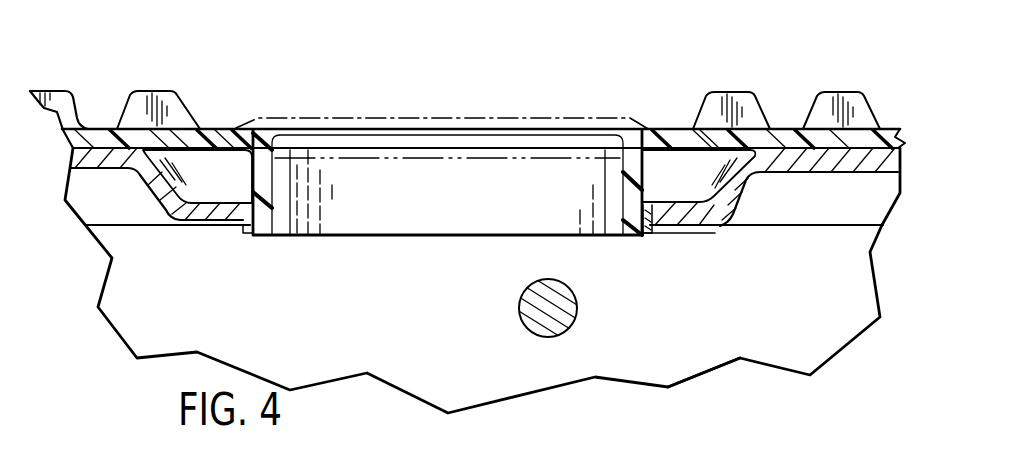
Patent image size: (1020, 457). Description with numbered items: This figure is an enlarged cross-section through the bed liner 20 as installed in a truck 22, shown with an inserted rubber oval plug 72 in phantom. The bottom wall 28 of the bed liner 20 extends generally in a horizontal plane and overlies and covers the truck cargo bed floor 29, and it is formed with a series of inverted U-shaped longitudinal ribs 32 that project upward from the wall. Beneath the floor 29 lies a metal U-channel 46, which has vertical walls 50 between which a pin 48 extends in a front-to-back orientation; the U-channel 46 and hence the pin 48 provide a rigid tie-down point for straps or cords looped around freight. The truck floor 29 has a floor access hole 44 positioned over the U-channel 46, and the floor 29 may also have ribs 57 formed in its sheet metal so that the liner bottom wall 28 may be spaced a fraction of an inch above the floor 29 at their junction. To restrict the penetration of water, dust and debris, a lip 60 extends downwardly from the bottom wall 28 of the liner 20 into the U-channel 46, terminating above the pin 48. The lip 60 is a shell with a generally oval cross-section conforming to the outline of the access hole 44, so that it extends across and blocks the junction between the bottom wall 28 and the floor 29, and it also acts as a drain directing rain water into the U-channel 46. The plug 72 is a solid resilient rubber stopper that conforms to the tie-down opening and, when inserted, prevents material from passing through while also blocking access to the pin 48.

The bed liner 20 is at (785, 120).
The truck 22 is at (842, 275).
The bottom wall 28 is at (95, 127).
The truck cargo bed floor 29 is at (148, 226).
The inverted U-shaped longitudinal ribs 32 is at (183, 98).
The floor access holes 44 is at (643, 195).
The U-channel 46 is at (707, 378).
The pin 48 is at (577, 302).
The vertical walls 50 is at (733, 304).
The ribs 57 is at (107, 170).
The lip 60 is at (250, 185).
The rubber oval plug 72 is at (363, 118).